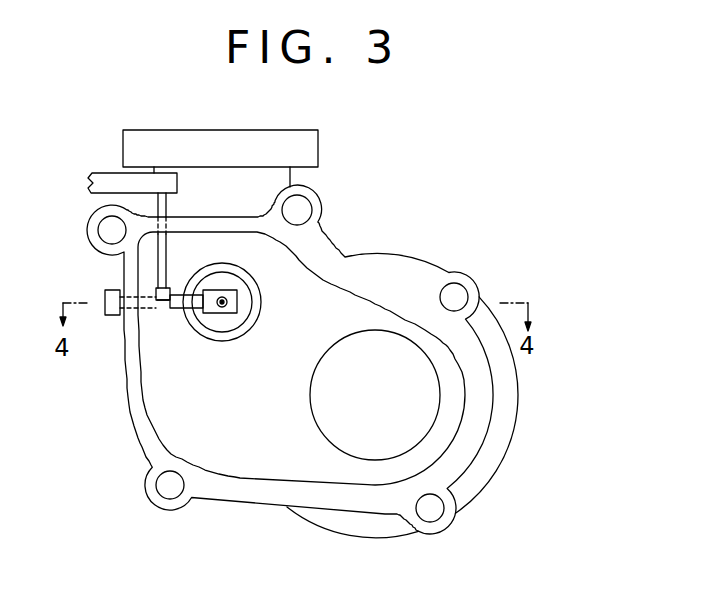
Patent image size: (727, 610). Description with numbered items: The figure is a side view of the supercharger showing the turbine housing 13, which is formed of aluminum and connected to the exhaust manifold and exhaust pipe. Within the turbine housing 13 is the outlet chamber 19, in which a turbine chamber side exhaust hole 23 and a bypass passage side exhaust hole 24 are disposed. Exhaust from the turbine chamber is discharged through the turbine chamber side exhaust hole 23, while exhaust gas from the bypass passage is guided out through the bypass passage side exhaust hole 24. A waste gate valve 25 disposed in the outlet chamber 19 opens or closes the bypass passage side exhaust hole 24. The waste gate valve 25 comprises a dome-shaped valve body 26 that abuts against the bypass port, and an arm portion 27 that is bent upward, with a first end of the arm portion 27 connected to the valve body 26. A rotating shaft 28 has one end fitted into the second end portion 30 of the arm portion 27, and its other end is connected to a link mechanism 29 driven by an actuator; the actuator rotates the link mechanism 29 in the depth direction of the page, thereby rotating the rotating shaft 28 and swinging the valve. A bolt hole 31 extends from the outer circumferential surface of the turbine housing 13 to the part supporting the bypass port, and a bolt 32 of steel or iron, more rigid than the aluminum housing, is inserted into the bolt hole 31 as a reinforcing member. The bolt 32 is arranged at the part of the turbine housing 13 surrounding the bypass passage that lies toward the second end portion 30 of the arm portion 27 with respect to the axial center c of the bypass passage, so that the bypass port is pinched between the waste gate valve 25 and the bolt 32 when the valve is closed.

The turbine housing 13 is at (318, 147).
The outlet chamber 19 is at (189, 458).
The turbine chamber side exhaust hole 23 is at (325, 436).
The bypass passage side exhaust hole 24 is at (223, 318).
The waste gate valve 25 is at (258, 337).
The valve body 26 is at (258, 307).
The arm portion 27 is at (171, 310).
The rotating shaft 28 is at (167, 244).
The link mechanism 29 is at (104, 172).
The second end portion 30 is at (161, 301).
The bolt hole 31 is at (152, 306).
The bolt 32 is at (108, 317).
The axial center c is at (222, 300).